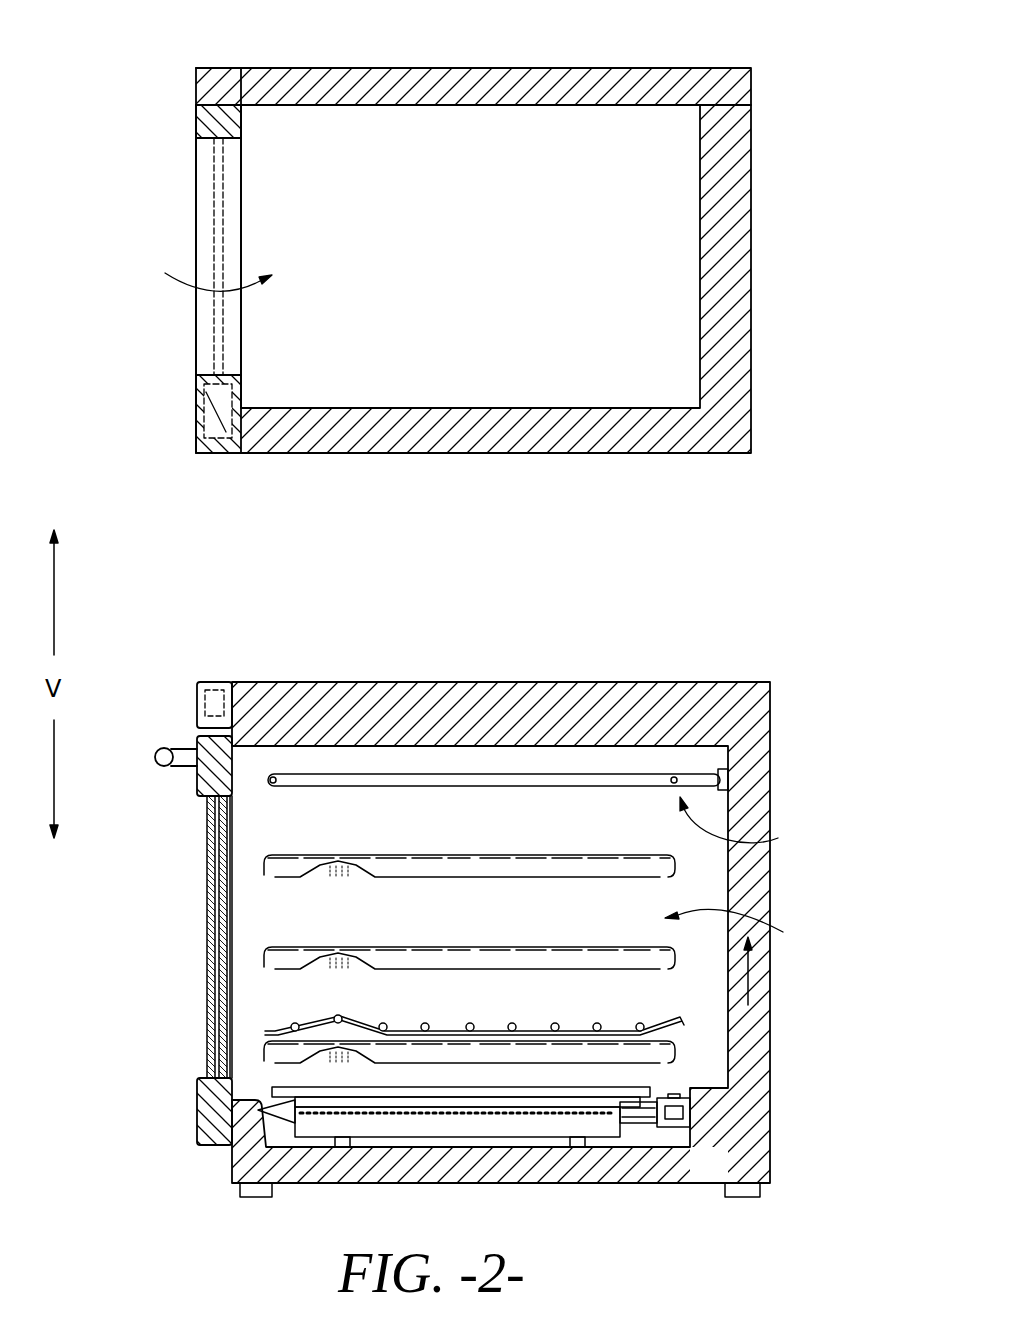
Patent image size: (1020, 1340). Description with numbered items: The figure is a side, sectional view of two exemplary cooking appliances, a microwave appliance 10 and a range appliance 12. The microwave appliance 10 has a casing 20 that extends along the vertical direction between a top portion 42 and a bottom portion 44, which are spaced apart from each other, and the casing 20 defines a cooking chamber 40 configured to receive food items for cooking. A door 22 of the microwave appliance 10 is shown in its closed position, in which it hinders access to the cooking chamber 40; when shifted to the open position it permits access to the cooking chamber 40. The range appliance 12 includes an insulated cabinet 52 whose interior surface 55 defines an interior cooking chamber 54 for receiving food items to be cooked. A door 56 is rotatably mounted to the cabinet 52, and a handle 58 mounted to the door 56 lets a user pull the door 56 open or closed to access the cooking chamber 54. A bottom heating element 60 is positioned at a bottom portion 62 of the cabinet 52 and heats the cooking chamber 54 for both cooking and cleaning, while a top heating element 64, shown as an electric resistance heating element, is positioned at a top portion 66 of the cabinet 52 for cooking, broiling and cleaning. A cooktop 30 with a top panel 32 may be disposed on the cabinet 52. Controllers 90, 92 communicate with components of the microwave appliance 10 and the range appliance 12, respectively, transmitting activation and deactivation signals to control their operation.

The microwave appliance 10 is at (159, 109).
The range appliance 12 is at (807, 690).
The casing 20 is at (755, 292).
The door 22 is at (206, 221).
The cooktop 30 is at (639, 657).
The top panel 32 is at (450, 682).
The cooking chamber 40 is at (201, 268).
The top portion 42 is at (646, 56).
The bottom portion 44 is at (645, 467).
The insulated cabinet 52 is at (770, 792).
The cooking chamber 54 is at (747, 957).
The interior surface 55 is at (350, 758).
The door 56 is at (200, 790).
The handle 58 is at (155, 753).
The bottom heating element 60 is at (641, 1141).
The bottom portion 62 is at (197, 1149).
The top heating element 64 is at (754, 824).
The top portion 66 is at (158, 672).
The controller 90 is at (200, 415).
The controller 92 is at (222, 690).